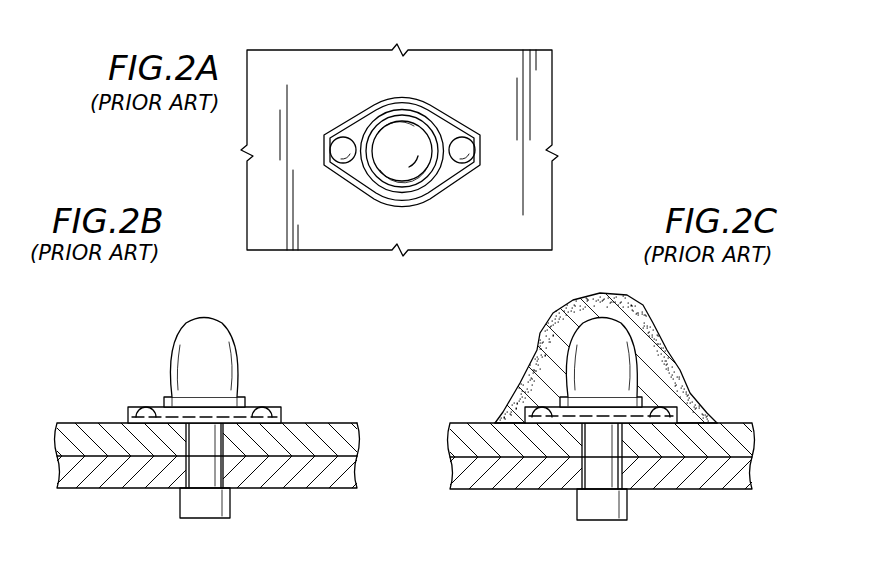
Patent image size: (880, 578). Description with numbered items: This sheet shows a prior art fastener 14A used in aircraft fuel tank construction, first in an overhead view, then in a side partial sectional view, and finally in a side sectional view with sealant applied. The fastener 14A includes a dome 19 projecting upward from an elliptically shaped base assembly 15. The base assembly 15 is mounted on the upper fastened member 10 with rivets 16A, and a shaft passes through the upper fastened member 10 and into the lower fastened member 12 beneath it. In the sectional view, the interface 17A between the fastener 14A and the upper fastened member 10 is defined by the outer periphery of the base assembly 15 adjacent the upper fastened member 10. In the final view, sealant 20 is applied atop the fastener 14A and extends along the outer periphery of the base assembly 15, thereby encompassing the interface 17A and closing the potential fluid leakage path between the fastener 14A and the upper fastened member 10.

In FIG. 2A, the upper fastened member 10 is at (334, 94).
In FIG. 2B, the upper fastened member 10 is at (347, 442).
In FIG. 2C, the upper fastened member 10 is at (747, 442).
In FIG. 2B, the lower fastened member 12 is at (353, 470).
In FIG. 2C, the lower fastened member 12 is at (747, 470).
In FIG. 2A, the fastener 14A is at (405, 121).
In FIG. 2B, the fastener 14A is at (216, 355).
In FIG. 2C, the fastener 14A is at (622, 346).
In FIG. 2A, the base assembly 15 is at (463, 138).
In FIG. 2B, the base assembly 15 is at (242, 402).
In FIG. 2C, the base assembly 15 is at (601, 402).
In FIG. 2A, the rivets 16A is at (344, 153).
In FIG. 2B, the rivets 16A is at (148, 410).
In FIG. 2C, the rivets 16A is at (530, 397).
In FIG. 2C, the interface 17A is at (720, 417).
In FIG. 2A, the dome 19 is at (420, 173).
In FIG. 2B, the dome 19 is at (232, 338).
In FIG. 2C, the dome 19 is at (617, 338).
In FIG. 2C, the sealant 20 is at (547, 330).